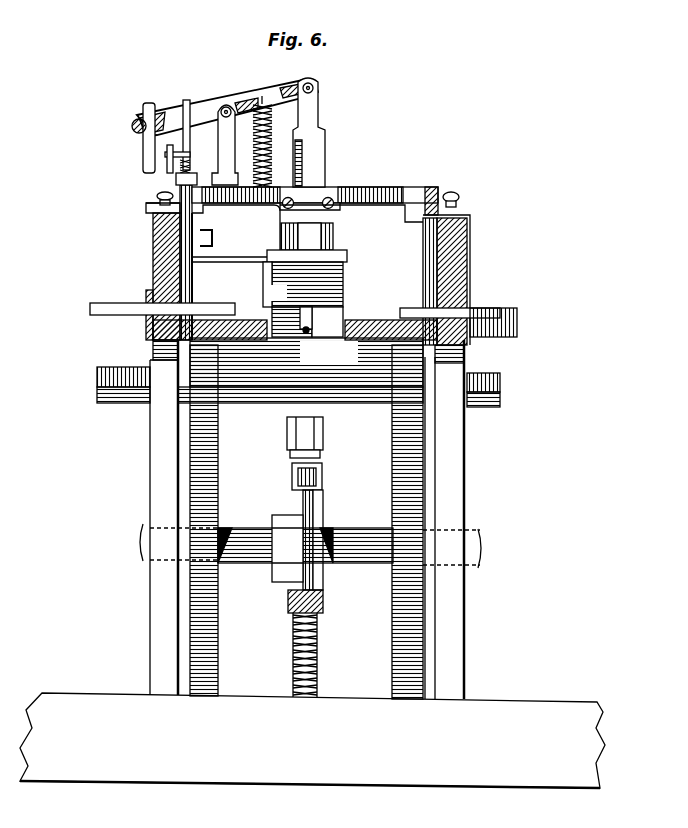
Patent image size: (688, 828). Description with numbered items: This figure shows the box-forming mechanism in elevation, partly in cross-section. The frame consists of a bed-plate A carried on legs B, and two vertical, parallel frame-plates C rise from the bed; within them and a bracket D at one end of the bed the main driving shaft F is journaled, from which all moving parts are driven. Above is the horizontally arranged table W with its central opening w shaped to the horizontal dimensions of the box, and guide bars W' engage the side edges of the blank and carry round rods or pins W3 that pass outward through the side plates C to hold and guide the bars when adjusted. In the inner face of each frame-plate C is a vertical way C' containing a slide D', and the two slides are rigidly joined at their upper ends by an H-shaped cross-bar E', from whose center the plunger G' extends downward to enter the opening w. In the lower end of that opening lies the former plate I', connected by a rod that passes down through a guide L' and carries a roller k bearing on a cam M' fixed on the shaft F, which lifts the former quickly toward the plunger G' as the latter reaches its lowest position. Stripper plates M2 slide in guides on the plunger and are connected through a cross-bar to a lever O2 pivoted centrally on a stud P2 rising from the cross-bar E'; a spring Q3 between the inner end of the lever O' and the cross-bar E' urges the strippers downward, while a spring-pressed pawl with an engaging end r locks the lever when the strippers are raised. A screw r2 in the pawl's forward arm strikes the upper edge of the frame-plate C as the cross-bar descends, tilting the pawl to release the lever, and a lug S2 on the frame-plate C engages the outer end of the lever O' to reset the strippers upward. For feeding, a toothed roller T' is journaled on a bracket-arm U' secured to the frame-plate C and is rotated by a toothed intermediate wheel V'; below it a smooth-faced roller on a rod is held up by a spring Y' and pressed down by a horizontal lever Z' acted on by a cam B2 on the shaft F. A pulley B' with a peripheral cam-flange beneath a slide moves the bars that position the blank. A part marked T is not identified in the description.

The bed-plate A is at (312, 740).
The frame-plate C is at (303, 519).
The vertical way C' is at (311, 265).
The leg B is at (394, 522).
The cam-pulley B' is at (219, 520).
The cam B2 is at (325, 525).
The former plate I' is at (298, 372).
The table W is at (295, 312).
The guide bar W' is at (308, 334).
The round rod or pin W3 is at (122, 313).
The H-shaped cross-bar E' is at (315, 186).
The bracket D is at (445, 188).
The slide D' is at (151, 193).
The bracket-arm U' is at (307, 235).
The plunger G' is at (323, 265).
The toothed intermediate wheel V' is at (319, 284).
The small block T is at (279, 293).
The central opening w is at (335, 337).
The guide L' is at (320, 438).
The roller k is at (323, 490).
The shaft F is at (260, 550).
The cam M' is at (276, 538).
The lever Z' is at (322, 600).
The spring Y' is at (320, 655).
The lever O2 is at (253, 92).
The lever O' is at (301, 75).
The stripper plate M2 is at (315, 165).
The stud P2 is at (221, 112).
The spring Q3 is at (273, 138).
The engaging end r is at (183, 110).
The screw r2 is at (168, 168).
The lug S2 is at (131, 128).
The toothed roller T' is at (186, 159).